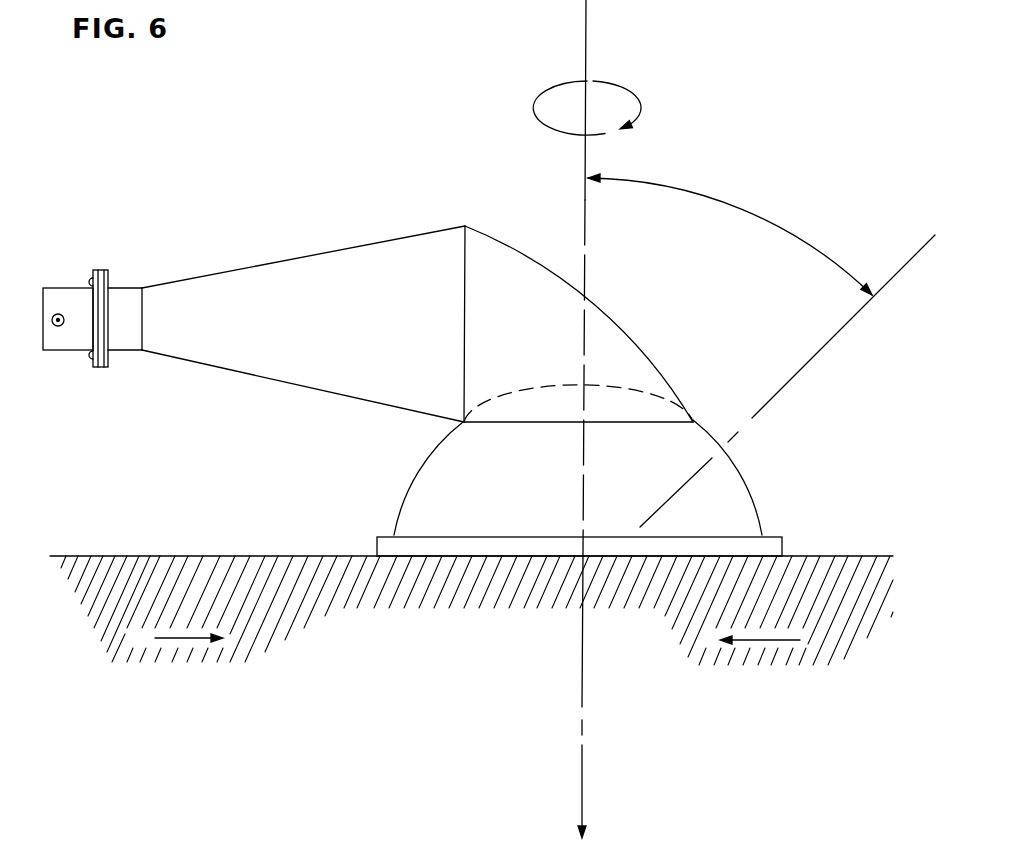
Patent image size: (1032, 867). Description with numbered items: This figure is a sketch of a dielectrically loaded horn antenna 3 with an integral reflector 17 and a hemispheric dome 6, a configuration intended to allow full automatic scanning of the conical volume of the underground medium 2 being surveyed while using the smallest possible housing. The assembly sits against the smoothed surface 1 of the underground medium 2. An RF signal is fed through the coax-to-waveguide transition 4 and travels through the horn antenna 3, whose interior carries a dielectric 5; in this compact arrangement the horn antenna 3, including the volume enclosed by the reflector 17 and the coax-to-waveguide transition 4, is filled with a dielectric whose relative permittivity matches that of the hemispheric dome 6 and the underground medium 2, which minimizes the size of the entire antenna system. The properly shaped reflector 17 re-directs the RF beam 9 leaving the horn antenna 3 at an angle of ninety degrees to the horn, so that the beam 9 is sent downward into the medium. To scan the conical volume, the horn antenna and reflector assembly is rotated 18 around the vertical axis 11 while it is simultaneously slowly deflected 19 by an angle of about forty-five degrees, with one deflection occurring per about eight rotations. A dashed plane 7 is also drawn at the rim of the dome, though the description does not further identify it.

The smoothed surface 1 is at (178, 555).
The underground medium 2 is at (467, 638).
The horn antenna 3 is at (323, 253).
The coax-to-waveguide transition 4 is at (62, 288).
The dielectric 5 is at (220, 342).
The hemispheric dome 6 is at (440, 488).
The rim plane of dome 7 is at (667, 401).
The RF beam 9 is at (580, 789).
The axis 11 is at (585, 37).
The reflector 17 is at (620, 327).
The rotation 18 is at (634, 92).
The deflection 19 is at (792, 233).